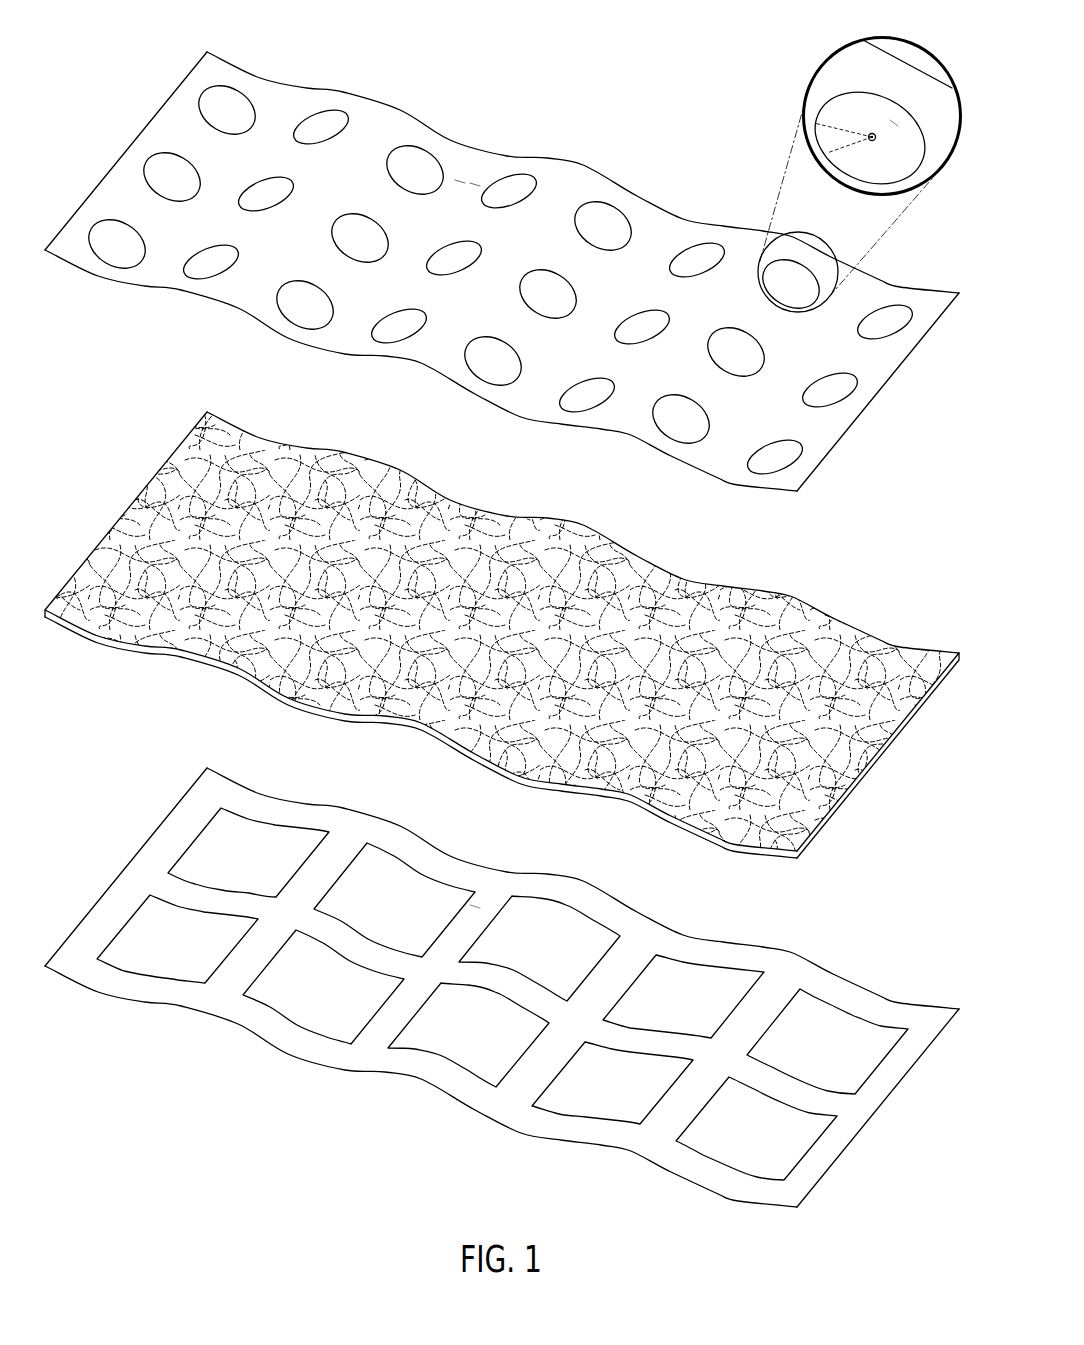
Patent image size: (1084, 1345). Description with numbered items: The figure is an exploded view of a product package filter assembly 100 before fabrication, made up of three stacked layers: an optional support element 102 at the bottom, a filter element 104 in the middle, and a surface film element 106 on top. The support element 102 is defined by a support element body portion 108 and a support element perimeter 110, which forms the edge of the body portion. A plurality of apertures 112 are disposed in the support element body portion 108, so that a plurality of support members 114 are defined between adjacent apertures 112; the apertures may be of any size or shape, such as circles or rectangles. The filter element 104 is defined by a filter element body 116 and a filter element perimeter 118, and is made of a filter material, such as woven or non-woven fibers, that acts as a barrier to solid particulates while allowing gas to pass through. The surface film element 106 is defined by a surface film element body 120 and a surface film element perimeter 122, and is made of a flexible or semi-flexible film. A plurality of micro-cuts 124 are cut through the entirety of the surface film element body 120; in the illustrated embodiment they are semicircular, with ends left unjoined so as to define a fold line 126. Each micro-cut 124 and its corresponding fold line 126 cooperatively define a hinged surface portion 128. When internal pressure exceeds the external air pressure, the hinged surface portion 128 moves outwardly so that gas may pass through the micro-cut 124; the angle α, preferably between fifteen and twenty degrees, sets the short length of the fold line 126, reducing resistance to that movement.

The product package filter assembly 100 is at (118, 40).
The support element 102 is at (899, 1103).
The filter element 104 is at (899, 752).
The surface film element 106 is at (899, 389).
The support element body portion 108 is at (72, 812).
The support element perimeter 110 is at (127, 863).
The apertures 112 is at (133, 948).
The support members 114 is at (480, 908).
The filter element body 116 is at (470, 540).
The filter element perimeter 118 is at (131, 500).
The surface film element body 120 is at (468, 182).
The surface film element perimeter 122 is at (123, 150).
The micro-cuts 124 is at (708, 243).
The fold line 126 is at (813, 143).
The hinged surface portion 128 is at (897, 118).